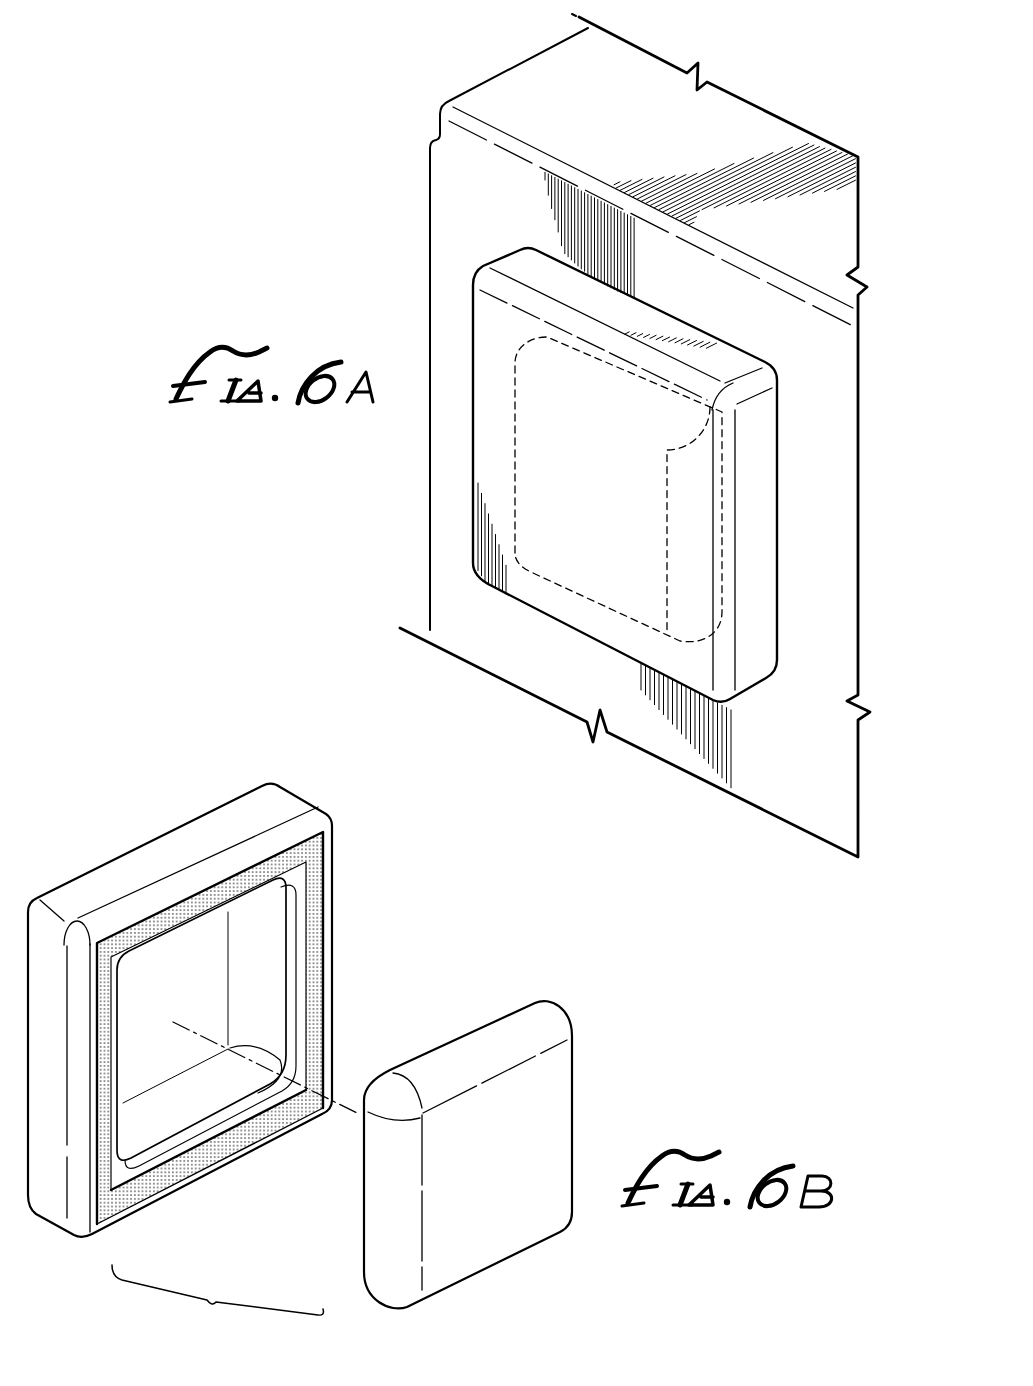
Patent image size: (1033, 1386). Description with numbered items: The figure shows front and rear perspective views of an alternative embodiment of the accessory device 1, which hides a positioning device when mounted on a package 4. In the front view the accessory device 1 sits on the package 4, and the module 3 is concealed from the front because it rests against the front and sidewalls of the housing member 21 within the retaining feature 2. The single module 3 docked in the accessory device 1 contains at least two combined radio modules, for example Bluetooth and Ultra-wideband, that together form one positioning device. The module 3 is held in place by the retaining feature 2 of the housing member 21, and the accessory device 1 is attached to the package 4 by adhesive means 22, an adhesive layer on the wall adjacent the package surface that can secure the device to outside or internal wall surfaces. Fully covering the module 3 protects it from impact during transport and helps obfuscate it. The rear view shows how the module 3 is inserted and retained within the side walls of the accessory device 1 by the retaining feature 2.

In FIG. 6A, the accessory device 1 is at (755, 559).
In FIG. 6B, the accessory device 1 is at (146, 861).
In FIG. 6B, the retaining feature 2 is at (273, 952).
In FIG. 6A, the housing member 21 is at (753, 485).
In FIG. 6B, the housing member 21 is at (277, 802).
In FIG. 6B, the adhesive means 22 is at (217, 1150).
In FIG. 6A, the module 3 is at (575, 590).
In FIG. 6B, the module 3 is at (502, 1220).
In FIG. 6A, the package 4 is at (471, 208).